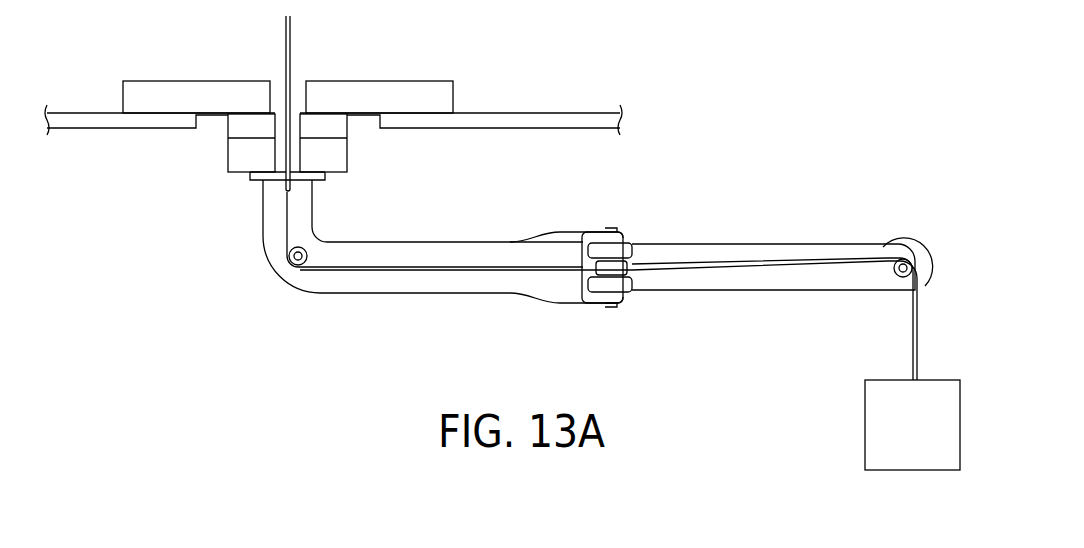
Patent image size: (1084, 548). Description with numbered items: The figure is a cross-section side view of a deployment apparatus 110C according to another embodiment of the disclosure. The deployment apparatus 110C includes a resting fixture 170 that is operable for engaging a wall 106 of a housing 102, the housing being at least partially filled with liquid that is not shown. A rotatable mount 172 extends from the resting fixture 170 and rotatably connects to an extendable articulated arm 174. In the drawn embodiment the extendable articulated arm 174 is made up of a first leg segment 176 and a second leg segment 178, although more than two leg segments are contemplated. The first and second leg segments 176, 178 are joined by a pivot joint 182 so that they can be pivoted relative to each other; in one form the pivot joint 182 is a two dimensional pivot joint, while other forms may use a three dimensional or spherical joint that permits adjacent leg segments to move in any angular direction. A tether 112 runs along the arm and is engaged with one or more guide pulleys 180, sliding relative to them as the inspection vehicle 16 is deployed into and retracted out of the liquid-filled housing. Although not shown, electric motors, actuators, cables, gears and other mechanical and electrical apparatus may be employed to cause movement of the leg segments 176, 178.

The housing 102 is at (597, 113).
The wall 106 is at (513, 113).
The deployment apparatus 110C is at (680, 165).
The tether 112 is at (285, 37).
The inspection vehicle 16 is at (922, 438).
The resting fixture 170 is at (413, 81).
The rotatable mount 172 is at (228, 163).
The extendable articulated arm 174 is at (375, 308).
The first leg segment 176 is at (402, 242).
The second leg segment 178 is at (743, 244).
The guide pulley 180 is at (289, 256).
The pivot joint 182 is at (607, 232).